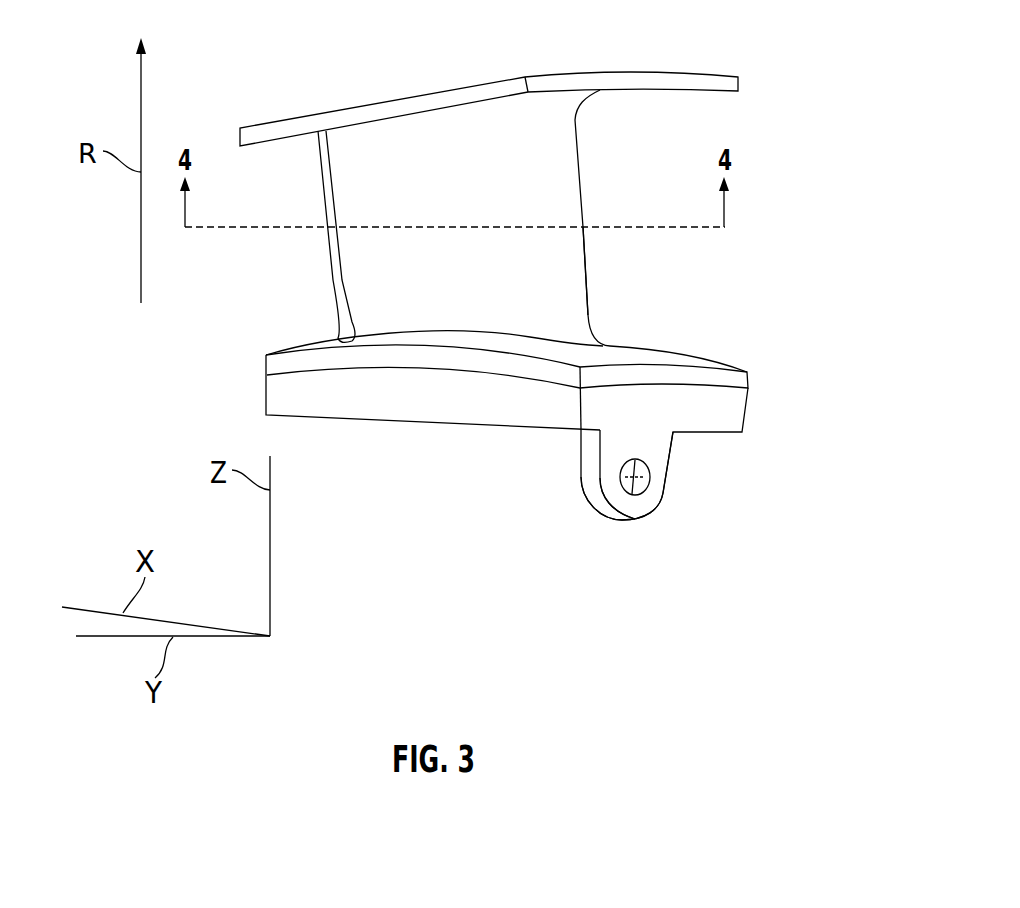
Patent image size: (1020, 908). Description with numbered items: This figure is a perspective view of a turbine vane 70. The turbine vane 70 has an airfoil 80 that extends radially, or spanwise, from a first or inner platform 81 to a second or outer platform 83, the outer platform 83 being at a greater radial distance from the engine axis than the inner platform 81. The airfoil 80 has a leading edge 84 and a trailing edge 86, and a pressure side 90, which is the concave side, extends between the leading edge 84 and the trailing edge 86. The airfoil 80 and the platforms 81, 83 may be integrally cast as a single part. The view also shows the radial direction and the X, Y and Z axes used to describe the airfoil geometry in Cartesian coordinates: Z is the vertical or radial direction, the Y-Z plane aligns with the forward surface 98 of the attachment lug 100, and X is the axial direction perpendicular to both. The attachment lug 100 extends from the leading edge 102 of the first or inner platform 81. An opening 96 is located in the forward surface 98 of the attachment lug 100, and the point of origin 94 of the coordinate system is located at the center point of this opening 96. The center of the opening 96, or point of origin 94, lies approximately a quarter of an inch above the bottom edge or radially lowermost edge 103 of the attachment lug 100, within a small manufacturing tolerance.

The turbine vane 70 is at (796, 33).
The second or outer platform 83 is at (605, 73).
The airfoil 80 is at (560, 177).
The leading edge 84 is at (588, 275).
The trailing edge 86 is at (323, 248).
The pressure side 90 is at (467, 290).
The first or inner platform 81 is at (664, 358).
The leading edge of the first or inner platform 102 is at (743, 389).
The forward surface 98 is at (651, 443).
The attachment lug 100 is at (662, 470).
The point of origin 94 is at (636, 478).
The opening 96 is at (636, 488).
The bottom edge or radially lowermost edge 103 is at (622, 520).